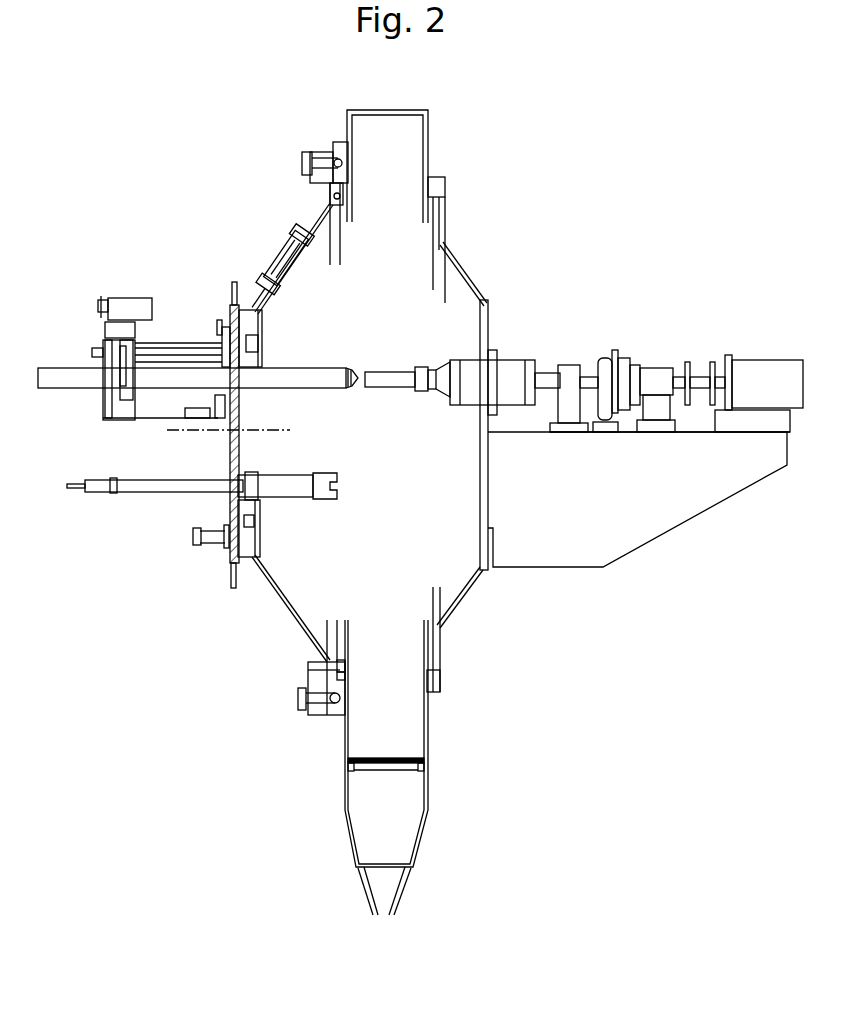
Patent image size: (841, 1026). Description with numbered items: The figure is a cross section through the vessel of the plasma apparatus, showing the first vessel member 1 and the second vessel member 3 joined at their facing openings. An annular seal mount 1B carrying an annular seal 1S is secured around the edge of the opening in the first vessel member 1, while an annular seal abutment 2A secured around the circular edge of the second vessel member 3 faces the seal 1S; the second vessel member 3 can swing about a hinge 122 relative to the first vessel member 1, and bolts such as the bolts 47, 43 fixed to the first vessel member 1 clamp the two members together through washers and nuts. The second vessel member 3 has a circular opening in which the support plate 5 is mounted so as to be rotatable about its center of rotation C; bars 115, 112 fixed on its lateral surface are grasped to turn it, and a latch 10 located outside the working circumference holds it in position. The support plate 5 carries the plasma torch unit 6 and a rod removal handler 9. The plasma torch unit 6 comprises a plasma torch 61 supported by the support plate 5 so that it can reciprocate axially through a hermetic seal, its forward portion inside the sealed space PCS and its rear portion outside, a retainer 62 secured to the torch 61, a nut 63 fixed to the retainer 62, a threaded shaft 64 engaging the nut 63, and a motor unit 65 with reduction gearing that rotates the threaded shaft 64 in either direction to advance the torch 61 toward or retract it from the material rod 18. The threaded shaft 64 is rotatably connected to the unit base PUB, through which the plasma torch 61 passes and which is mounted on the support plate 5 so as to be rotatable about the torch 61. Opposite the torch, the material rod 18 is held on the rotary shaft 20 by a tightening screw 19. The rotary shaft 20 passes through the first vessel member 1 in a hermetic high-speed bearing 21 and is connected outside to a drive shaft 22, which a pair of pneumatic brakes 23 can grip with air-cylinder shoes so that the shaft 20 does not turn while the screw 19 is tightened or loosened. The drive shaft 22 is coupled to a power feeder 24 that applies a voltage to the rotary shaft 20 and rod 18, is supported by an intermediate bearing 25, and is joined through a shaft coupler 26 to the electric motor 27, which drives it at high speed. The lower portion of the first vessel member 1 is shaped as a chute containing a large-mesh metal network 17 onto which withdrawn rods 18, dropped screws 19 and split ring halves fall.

The first vessel member 1 is at (430, 130).
The second vessel member 3 is at (278, 600).
The bolt 47 is at (322, 155).
The hinge 122 is at (292, 246).
The support plate 5 is at (240, 446).
The bar 115 is at (234, 282).
The bar 112 is at (230, 578).
The unit base PUB is at (226, 322).
The plasma torch unit 6 is at (126, 349).
The motor unit 65 is at (132, 298).
The retainer 62 is at (130, 378).
The nut 63 is at (150, 345).
The threaded shaft 64 is at (198, 344).
The plasma torch 61 is at (310, 368).
The material rod 18 is at (376, 372).
The tightening screw 19 is at (422, 366).
The rotary shaft 20 is at (432, 392).
The sealed space PCS is at (360, 300).
The bearing 21 is at (512, 354).
The drive shaft 22 is at (566, 364).
The pneumatic brakes 23 is at (600, 358).
The power feeder 24 is at (622, 354).
The intermediate bearing 25 is at (660, 368).
The shaft coupler 26 is at (690, 361).
The electric motor 27 is at (768, 359).
The rod removal handler 9 is at (138, 494).
The latch 10 is at (200, 544).
The center of rotation C is at (187, 440).
The annular seal abutment 2A is at (306, 672).
The annular seal 1S is at (346, 667).
The annular seal mount 1B is at (346, 676).
The bolt 43 is at (316, 710).
The metal network 17 is at (400, 762).